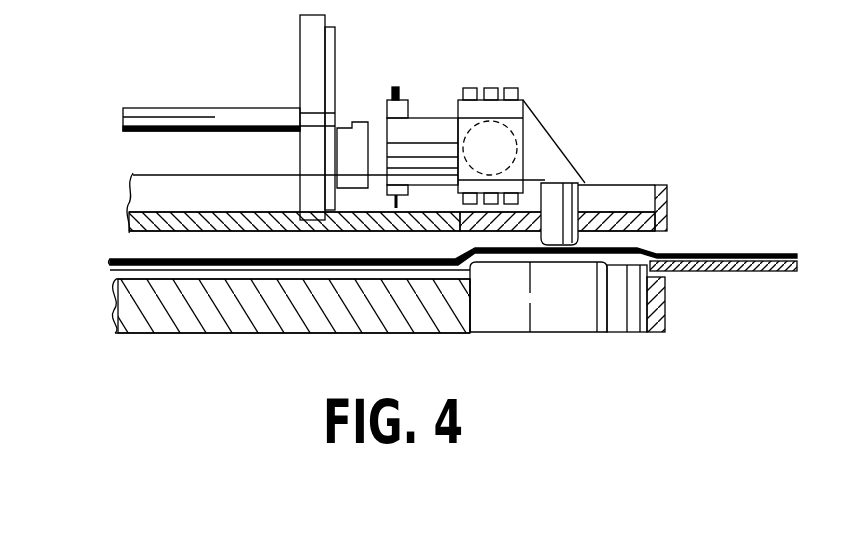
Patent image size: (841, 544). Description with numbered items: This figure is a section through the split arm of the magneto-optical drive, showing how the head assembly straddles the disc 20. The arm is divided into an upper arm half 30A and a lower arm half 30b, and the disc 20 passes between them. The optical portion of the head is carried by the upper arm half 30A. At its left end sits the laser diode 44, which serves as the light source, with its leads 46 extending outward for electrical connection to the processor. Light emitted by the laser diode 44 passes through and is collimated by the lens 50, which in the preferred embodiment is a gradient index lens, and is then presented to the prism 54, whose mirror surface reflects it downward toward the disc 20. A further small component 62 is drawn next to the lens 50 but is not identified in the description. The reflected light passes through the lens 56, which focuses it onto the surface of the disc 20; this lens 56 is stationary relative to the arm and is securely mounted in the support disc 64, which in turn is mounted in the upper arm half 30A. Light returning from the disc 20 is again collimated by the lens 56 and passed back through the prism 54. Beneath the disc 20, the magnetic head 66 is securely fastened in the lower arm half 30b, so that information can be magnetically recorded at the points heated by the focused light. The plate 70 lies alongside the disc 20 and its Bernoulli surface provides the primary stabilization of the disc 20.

The disc 20 is at (275, 262).
The upper arm half 30A is at (182, 193).
The lower arm half 30b is at (320, 320).
The laser diode 44 is at (335, 97).
The leads 46 is at (227, 118).
The lens 50 is at (418, 127).
The prism 54 is at (542, 162).
The lens 56 is at (578, 197).
The terminal 62 is at (403, 100).
The support disc 64 is at (627, 213).
The magnetic head 66 is at (560, 315).
The plate 70 is at (713, 272).